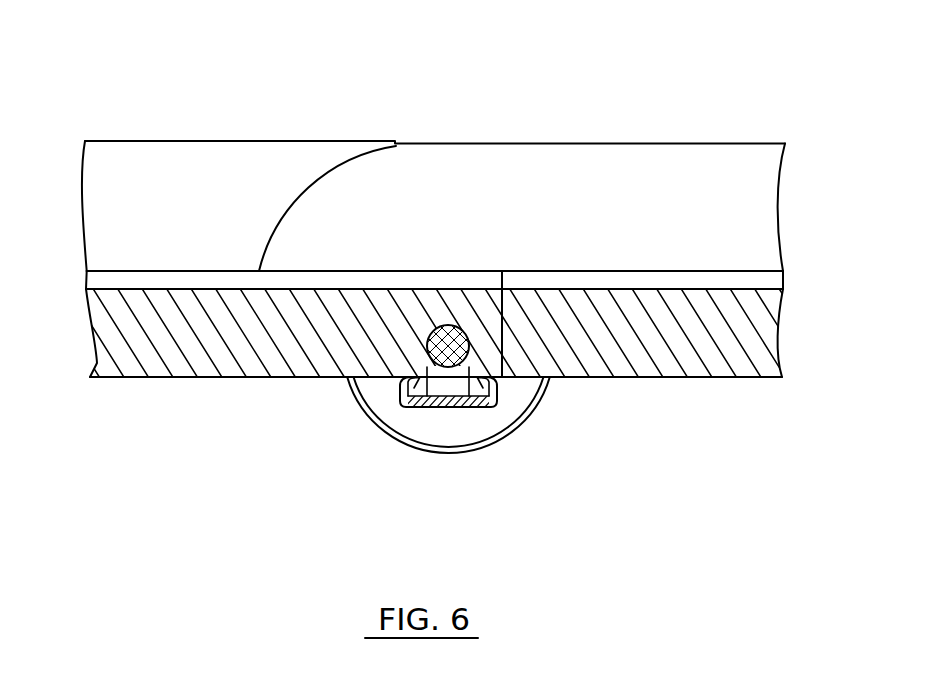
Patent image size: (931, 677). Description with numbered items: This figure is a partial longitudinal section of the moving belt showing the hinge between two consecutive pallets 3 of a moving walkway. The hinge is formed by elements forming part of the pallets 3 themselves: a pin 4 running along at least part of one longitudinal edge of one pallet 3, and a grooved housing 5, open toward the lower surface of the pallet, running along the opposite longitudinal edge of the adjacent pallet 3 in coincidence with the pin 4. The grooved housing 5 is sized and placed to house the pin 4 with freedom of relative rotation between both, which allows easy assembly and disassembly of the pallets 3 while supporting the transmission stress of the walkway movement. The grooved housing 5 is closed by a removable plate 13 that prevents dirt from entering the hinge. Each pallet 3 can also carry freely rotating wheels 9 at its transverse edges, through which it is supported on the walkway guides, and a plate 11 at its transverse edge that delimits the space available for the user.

The pallet 3 is at (294, 331).
The pin 4 is at (448, 345).
The grooved housing 5 is at (444, 392).
The wheel 9 is at (390, 410).
The plate 11 is at (492, 213).
The removable plate 13 is at (421, 407).